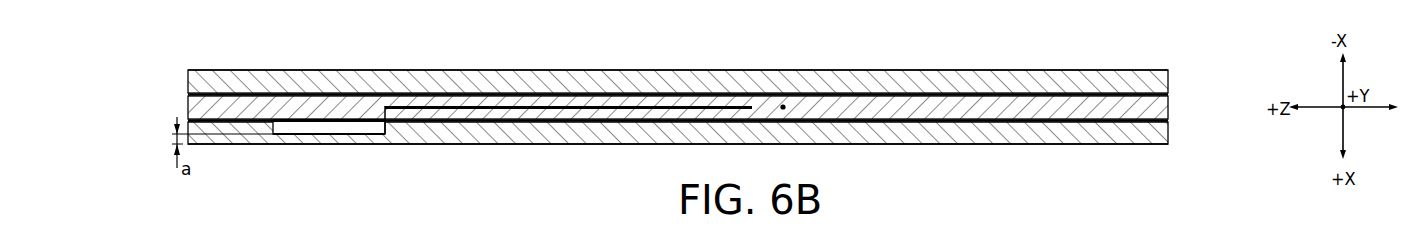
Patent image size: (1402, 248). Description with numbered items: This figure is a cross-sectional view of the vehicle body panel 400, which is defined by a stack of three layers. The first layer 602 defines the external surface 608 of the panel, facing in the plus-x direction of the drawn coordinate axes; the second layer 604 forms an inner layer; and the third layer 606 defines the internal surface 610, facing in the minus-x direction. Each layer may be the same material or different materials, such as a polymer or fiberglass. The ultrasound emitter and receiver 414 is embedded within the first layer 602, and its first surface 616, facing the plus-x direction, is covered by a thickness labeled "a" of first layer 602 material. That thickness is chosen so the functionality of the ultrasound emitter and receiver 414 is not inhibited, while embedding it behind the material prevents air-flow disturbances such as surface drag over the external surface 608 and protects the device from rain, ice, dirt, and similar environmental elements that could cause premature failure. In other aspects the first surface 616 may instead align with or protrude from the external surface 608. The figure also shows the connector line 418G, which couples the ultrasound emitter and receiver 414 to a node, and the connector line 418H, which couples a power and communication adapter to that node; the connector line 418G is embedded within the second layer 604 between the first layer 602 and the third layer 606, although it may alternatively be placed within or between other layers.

The vehicle body panel 400 is at (157, 100).
The third layer 606 is at (1165, 82).
The second layer 604 is at (1165, 107).
The first layer 602 is at (1165, 134).
The internal surface 610 is at (1027, 69).
The external surface 608 is at (1027, 145).
The connector line 418G is at (682, 107).
The connector line 418H is at (783, 106).
The first surface 616 is at (315, 135).
The ultrasound emitter and receiver 414 is at (363, 128).